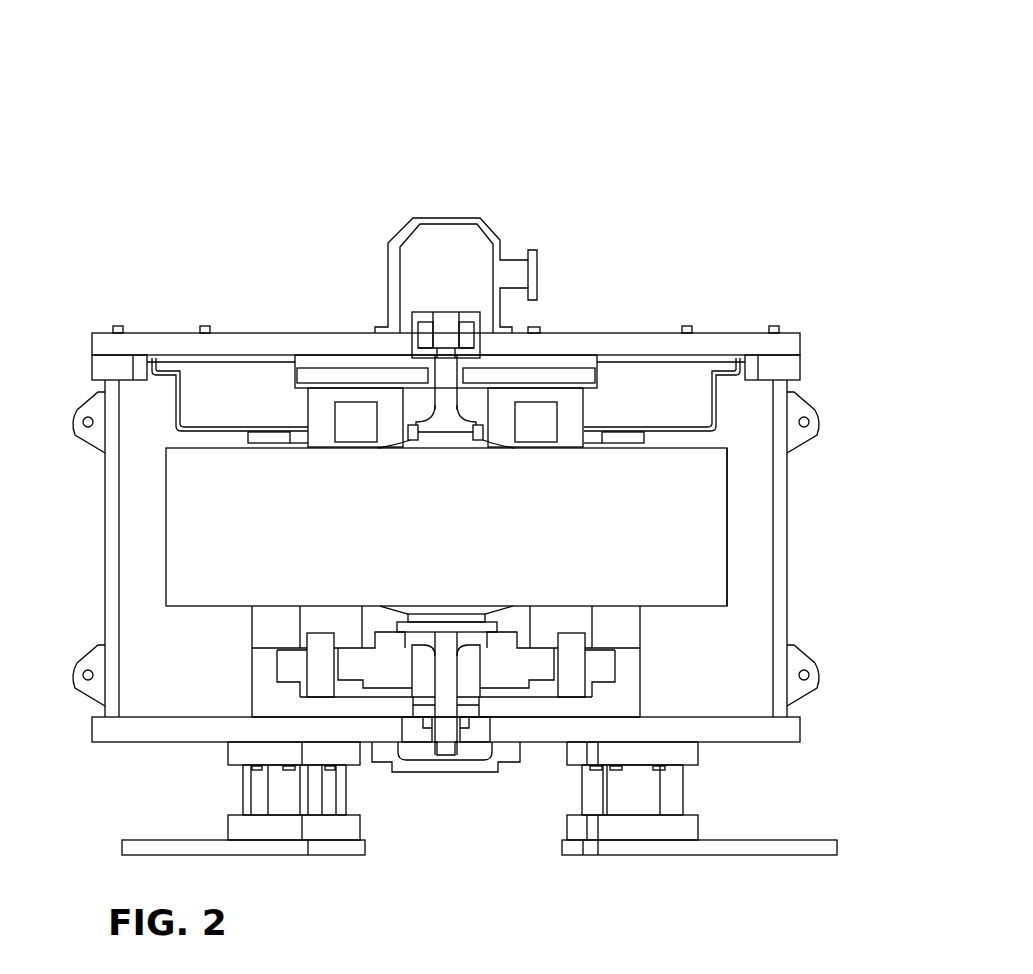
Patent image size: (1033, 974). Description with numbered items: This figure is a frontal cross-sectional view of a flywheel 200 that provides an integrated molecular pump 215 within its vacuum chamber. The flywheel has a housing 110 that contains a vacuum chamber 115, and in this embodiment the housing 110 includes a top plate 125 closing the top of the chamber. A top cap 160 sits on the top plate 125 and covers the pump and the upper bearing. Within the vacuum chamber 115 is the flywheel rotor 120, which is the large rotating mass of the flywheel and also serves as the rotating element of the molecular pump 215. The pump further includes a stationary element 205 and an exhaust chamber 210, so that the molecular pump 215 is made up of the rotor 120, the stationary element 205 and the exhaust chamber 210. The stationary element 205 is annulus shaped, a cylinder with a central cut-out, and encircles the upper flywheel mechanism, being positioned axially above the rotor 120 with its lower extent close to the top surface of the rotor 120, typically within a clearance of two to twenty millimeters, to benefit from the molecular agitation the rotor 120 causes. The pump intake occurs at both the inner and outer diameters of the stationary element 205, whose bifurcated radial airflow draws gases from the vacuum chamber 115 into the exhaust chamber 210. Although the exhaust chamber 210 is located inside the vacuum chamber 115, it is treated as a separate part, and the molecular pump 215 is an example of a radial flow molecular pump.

The flywheel 200 is at (305, 122).
The top cap 160 is at (493, 229).
The top plate 125 is at (150, 334).
The housing 110 is at (104, 557).
The vacuum chamber 115 is at (146, 515).
The flywheel rotor 120 is at (727, 498).
The exhaust chamber 210 is at (208, 399).
The stationary element 205 is at (250, 438).
The molecular pump 215 is at (860, 432).